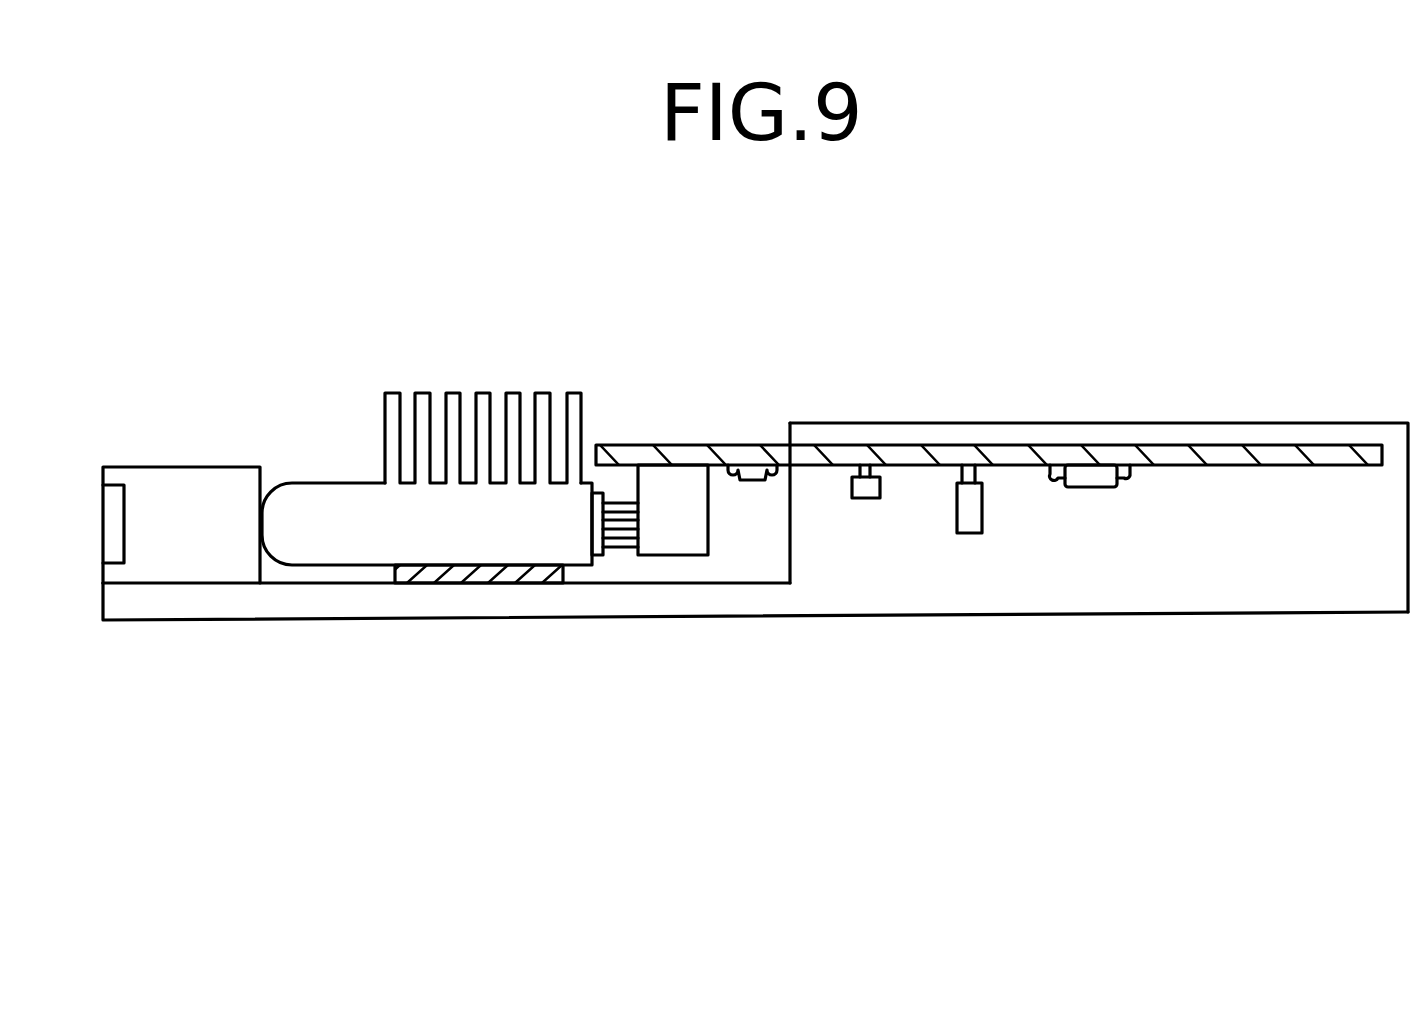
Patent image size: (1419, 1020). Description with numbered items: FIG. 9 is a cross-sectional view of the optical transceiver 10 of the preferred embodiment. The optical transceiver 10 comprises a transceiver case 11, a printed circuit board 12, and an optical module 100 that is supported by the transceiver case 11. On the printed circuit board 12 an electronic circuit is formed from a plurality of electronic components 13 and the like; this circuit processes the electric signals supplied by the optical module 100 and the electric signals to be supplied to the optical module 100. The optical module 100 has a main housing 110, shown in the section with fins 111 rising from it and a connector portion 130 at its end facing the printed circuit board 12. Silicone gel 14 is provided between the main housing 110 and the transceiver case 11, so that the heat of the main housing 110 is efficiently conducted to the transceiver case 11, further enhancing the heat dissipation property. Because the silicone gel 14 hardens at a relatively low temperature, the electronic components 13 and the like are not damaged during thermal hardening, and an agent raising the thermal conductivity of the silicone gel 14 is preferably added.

The optical transceiver 10 is at (1215, 278).
The transceiver case 11 is at (1042, 600).
The printed circuit board 12 is at (730, 452).
The electronic components 13 is at (760, 480).
The silicone gel 14 is at (388, 582).
The optical module 100 is at (330, 398).
The main housing 110 is at (330, 483).
The heat radiating fins 111 is at (483, 393).
The connector lead terminals 130 is at (598, 556).